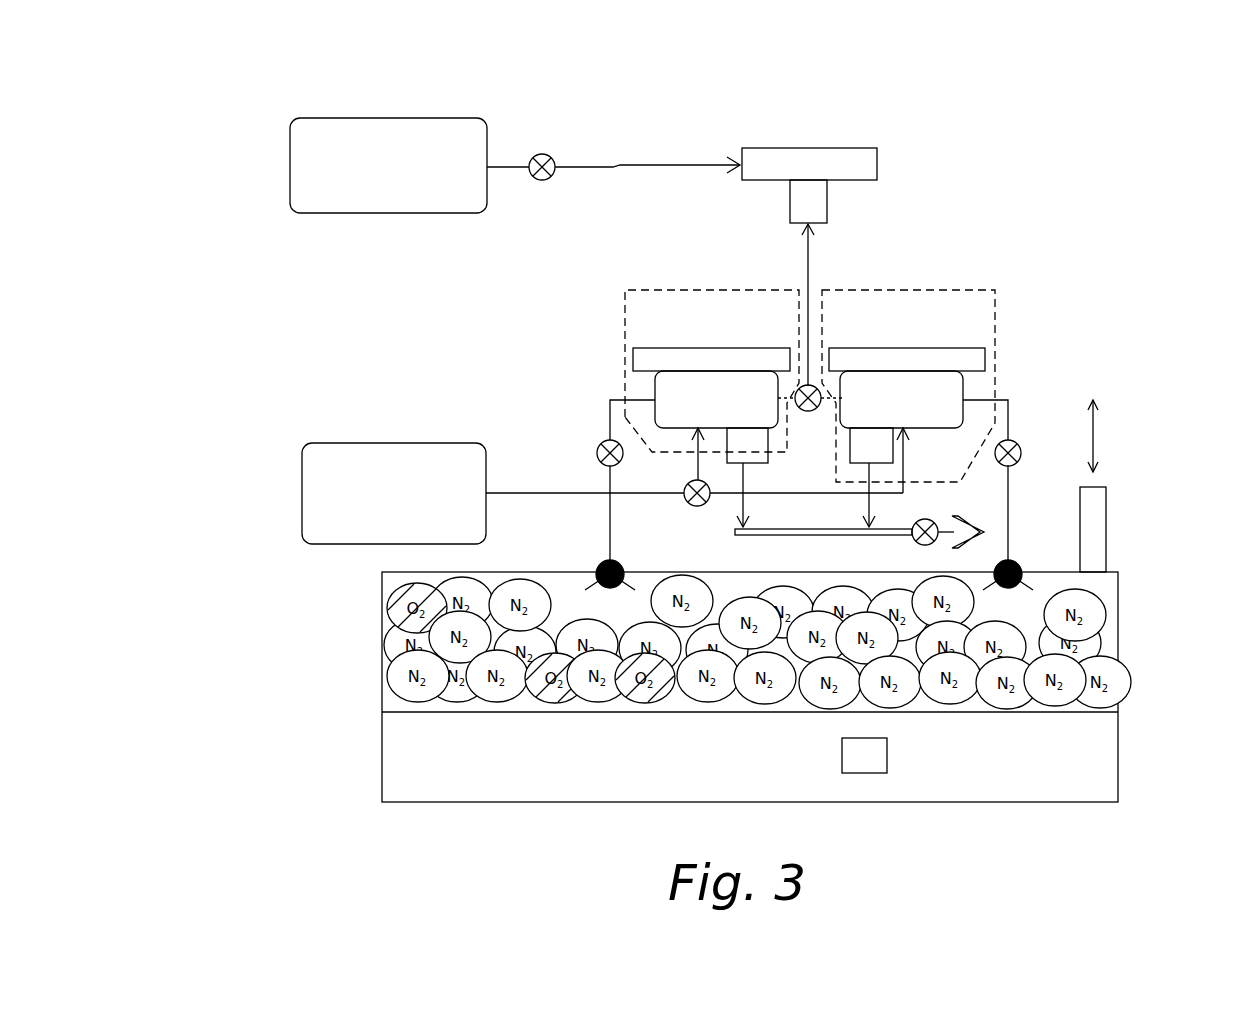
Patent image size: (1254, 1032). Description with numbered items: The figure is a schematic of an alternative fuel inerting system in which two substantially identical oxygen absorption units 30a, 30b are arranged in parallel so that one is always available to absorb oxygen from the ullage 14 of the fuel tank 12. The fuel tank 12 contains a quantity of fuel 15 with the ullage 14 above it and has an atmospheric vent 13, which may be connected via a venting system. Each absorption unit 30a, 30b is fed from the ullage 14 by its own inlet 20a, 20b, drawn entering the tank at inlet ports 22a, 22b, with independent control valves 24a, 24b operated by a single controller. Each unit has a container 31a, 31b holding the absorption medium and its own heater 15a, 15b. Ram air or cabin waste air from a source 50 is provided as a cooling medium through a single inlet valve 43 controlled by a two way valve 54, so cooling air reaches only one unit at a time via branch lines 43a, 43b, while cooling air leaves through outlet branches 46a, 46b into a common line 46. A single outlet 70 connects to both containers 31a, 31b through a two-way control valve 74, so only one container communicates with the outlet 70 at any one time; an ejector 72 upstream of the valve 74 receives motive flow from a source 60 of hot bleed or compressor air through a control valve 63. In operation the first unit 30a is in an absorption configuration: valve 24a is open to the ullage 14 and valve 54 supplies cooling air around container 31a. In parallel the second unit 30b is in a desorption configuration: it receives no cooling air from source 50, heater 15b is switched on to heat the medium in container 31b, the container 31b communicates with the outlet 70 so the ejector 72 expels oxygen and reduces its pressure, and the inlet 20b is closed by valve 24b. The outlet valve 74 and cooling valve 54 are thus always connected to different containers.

The fuel tank 12 is at (382, 678).
The atmospheric vent 13 is at (1106, 513).
The ullage 14 is at (1200, 655).
The fuel 15 is at (1098, 772).
The heater 15a is at (633, 360).
The heater 15b is at (985, 355).
The inlet 20a is at (610, 517).
The inlet 20b is at (1008, 525).
The inlet port 22a is at (600, 565).
The inlet port 22b is at (1012, 563).
The control valve 24a is at (597, 448).
The control valve 24b is at (1020, 440).
The oxygen absorption unit 30a is at (625, 312).
The oxygen absorption unit 30b is at (995, 296).
The container 31a is at (655, 390).
The container 31b is at (963, 385).
The inlet valve 43 is at (513, 493).
The air supply branch line 43a is at (697, 460).
The air supply branch line 43b is at (903, 470).
The outlet line 46 is at (820, 535).
The outlet branch line 46a is at (743, 478).
The outlet branch line 46b is at (869, 520).
The source 50 is at (302, 493).
The two way valve 54 is at (692, 508).
The source of hot bleed or compressor air 60 is at (390, 118).
The control valve 63 is at (542, 154).
The outlet 70 is at (808, 258).
The ejector 72 is at (808, 148).
The two-way control valve 74 is at (813, 386).